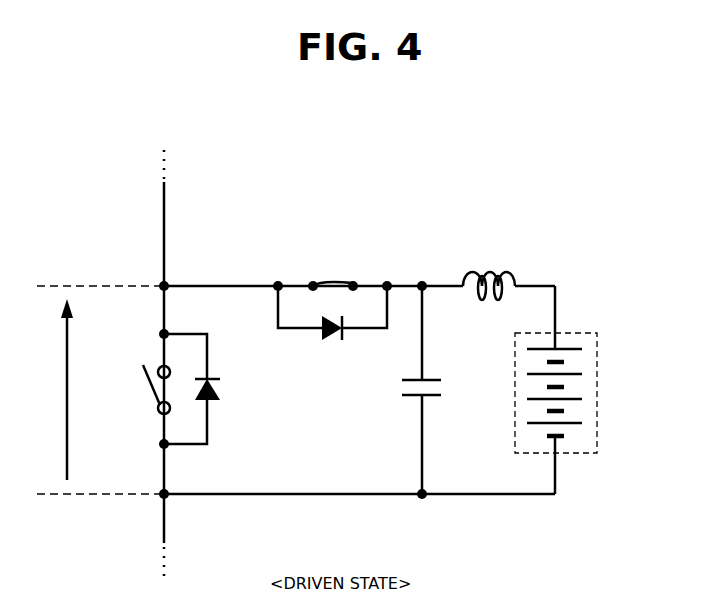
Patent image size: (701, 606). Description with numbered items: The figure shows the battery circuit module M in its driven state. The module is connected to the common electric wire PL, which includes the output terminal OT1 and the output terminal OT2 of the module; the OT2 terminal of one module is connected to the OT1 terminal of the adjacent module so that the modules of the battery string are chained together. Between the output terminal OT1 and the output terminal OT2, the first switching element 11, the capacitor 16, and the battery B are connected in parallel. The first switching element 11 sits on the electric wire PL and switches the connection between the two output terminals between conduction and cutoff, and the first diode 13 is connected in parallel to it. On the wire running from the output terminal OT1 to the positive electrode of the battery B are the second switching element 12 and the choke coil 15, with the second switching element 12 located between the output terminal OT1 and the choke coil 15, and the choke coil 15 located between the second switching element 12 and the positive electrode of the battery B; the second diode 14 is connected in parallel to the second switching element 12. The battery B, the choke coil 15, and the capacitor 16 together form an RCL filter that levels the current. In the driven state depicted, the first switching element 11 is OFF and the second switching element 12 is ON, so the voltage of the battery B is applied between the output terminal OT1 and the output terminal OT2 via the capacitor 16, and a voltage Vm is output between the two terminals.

The first switching element 11 is at (150, 393).
The second switching element 12 is at (331, 282).
The first diode 13 is at (213, 402).
The second diode 14 is at (345, 333).
The choke coil 15 is at (507, 272).
The capacitor 16 is at (413, 398).
The battery B is at (573, 331).
The battery circuit module M is at (572, 203).
The electric wire PL is at (166, 206).
The output terminal OT1 is at (160, 284).
The output terminal OT2 is at (161, 497).
The voltage Vm is at (50, 389).